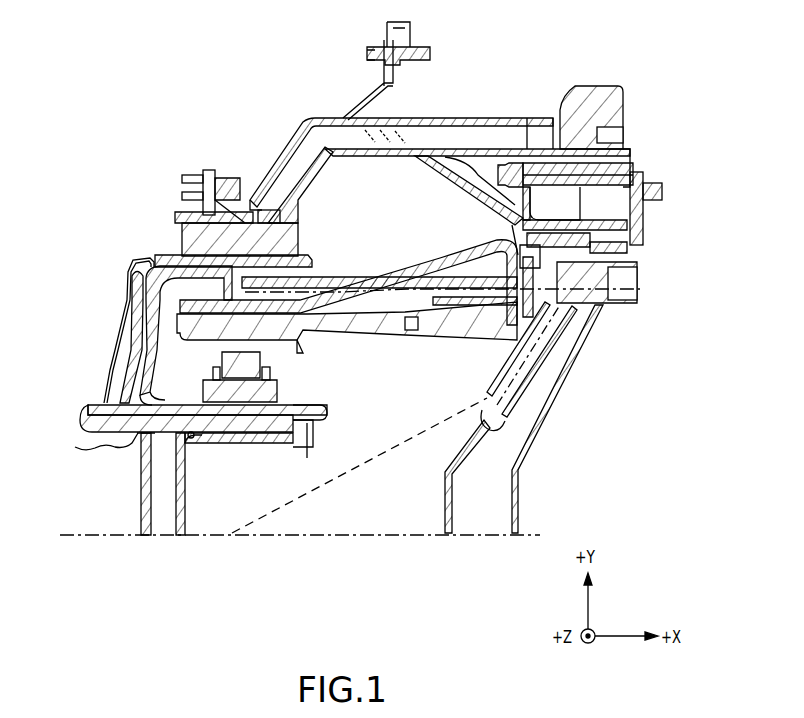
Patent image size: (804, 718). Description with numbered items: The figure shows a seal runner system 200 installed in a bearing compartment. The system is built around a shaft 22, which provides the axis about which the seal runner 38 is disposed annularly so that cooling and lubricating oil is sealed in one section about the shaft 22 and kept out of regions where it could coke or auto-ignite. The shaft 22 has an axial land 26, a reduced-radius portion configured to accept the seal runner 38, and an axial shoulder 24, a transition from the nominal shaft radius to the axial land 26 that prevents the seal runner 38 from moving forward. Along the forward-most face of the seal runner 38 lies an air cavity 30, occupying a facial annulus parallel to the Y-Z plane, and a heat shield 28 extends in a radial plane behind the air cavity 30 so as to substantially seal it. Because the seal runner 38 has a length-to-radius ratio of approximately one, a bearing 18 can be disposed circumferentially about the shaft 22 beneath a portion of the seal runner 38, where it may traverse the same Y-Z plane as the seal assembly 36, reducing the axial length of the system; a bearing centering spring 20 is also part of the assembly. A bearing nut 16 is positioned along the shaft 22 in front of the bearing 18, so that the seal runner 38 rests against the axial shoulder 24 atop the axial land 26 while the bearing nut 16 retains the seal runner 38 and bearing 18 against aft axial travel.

The seal runner system 200 is at (258, 79).
The bearing nut 16 is at (300, 397).
The bearing 18 is at (253, 371).
The bearing centering spring 20 is at (310, 327).
The shaft 22 is at (88, 405).
The axial shoulder 24 is at (90, 424).
The axial land 26 is at (133, 440).
The heat shield 28 is at (110, 365).
The air cavity 30 is at (128, 347).
The seal assembly 36 is at (213, 242).
The seal runner 38 is at (147, 322).